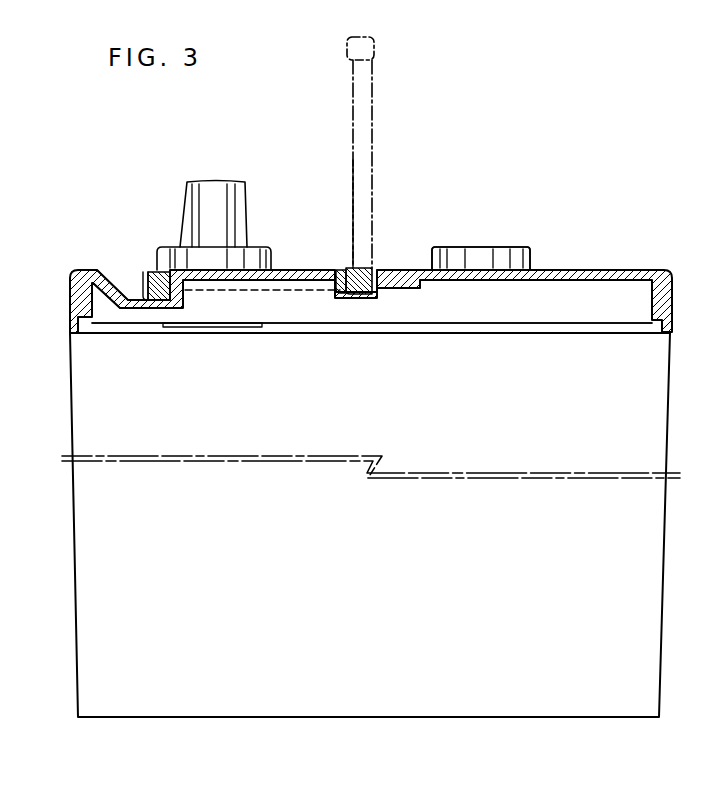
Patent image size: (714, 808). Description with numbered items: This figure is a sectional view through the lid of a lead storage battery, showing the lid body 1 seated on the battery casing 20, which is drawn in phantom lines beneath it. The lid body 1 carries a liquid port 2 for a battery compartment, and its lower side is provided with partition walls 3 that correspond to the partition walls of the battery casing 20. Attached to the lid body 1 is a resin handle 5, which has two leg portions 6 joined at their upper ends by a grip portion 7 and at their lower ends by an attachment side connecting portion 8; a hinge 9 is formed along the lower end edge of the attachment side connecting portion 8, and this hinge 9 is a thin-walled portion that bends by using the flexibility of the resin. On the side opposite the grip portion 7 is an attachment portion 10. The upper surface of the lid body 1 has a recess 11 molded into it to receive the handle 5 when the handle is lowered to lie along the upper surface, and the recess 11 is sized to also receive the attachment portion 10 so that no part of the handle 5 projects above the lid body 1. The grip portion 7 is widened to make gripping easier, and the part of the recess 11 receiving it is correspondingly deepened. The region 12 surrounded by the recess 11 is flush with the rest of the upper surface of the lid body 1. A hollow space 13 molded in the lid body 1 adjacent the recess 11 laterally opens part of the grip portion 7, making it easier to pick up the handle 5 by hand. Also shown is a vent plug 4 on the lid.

The lid body 1 is at (650, 252).
The liquid port 2 is at (514, 252).
The partition wall 3 is at (600, 315).
The vent plug 4 is at (187, 182).
The handle 5 is at (162, 272).
The leg portion 6 is at (380, 180).
The grip portion 7 is at (120, 268).
The attachment side connecting portion 8 is at (364, 252).
The hinge 9 is at (378, 269).
The attachment portion 10 is at (392, 269).
The recess 11 is at (145, 271).
The region 12 is at (277, 267).
The hollow space 13 is at (100, 272).
The battery casing 20 is at (543, 719).